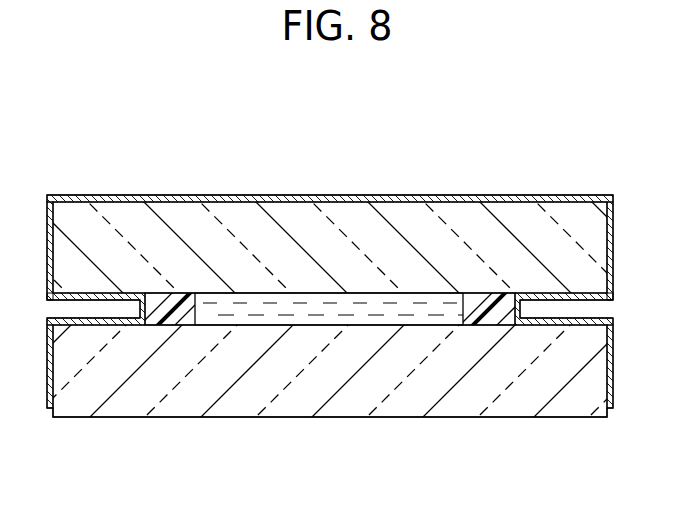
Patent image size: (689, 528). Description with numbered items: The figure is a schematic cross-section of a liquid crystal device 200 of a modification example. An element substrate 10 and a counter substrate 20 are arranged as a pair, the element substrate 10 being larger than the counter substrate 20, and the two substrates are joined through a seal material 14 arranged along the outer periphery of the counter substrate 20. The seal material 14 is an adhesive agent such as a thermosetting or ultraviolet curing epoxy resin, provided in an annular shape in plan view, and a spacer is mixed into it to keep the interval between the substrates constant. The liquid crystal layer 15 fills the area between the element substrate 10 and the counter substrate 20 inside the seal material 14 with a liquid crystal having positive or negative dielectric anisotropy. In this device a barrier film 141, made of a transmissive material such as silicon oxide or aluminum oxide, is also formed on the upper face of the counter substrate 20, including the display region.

The liquid crystal device 200 is at (548, 146).
The barrier film 141 is at (108, 195).
The counter substrate 20 is at (380, 212).
The element substrate 10 is at (372, 413).
The seal material 14 is at (183, 297).
The liquid crystal layer 15 is at (288, 305).